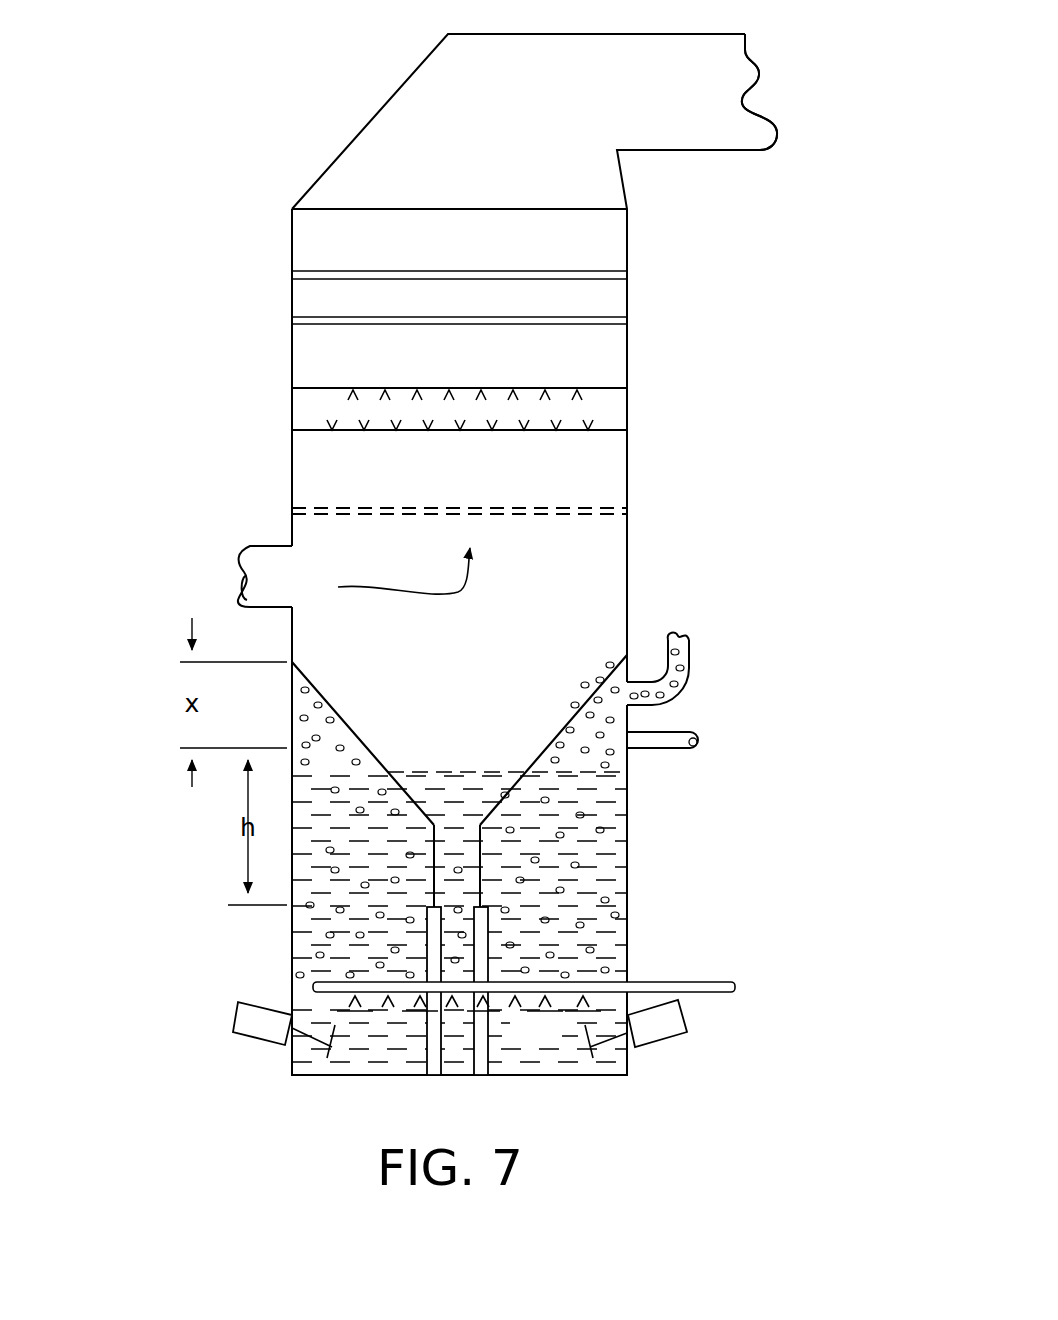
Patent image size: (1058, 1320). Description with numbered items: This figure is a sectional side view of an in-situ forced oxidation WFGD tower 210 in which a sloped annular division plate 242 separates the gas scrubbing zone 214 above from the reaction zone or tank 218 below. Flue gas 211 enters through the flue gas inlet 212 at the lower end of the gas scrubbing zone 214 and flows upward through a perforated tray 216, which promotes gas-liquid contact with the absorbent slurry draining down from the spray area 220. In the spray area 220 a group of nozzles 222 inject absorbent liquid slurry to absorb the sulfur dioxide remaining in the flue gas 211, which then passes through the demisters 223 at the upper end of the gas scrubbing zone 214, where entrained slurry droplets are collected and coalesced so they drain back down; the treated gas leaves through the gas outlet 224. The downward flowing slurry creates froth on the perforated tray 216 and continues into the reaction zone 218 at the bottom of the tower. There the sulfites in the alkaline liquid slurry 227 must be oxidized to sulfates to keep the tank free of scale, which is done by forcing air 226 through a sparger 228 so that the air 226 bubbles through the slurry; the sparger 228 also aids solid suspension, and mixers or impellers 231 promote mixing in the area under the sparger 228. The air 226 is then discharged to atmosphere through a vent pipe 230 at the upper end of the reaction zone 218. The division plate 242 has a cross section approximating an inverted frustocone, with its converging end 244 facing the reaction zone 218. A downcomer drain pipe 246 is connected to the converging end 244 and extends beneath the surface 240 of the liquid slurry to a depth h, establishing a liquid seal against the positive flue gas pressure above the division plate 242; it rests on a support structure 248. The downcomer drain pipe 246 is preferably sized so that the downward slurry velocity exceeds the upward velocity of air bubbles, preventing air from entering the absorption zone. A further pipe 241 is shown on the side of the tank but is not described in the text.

The in-situ forced oxidation WFGD tower 210 is at (232, 306).
The flue gas 211 is at (458, 593).
The flue gas inlet 212 is at (241, 576).
The gas scrubbing zone 214 is at (478, 470).
The perforated tray 216 is at (580, 515).
The reaction zone or tank 218 is at (536, 1037).
The spray area 220 is at (611, 408).
The nozzles 222 is at (590, 396).
The demisters or moisture separators 223 is at (592, 301).
The gas outlet 224 is at (758, 110).
The air 226 is at (620, 897).
The alkaline liquid slurry 227 is at (330, 950).
The sparger 228 is at (582, 1008).
The vent pipe 230 is at (685, 658).
The agitator or mixer/impeller 231 is at (665, 1043).
The surface of the liquid slurry 240 is at (318, 745).
The drain pipe 241 is at (698, 736).
The annular division plate 242 is at (314, 685).
The converging end 244 is at (437, 820).
The downcomer drain pipe 246 is at (485, 853).
The support structure 248 is at (483, 925).